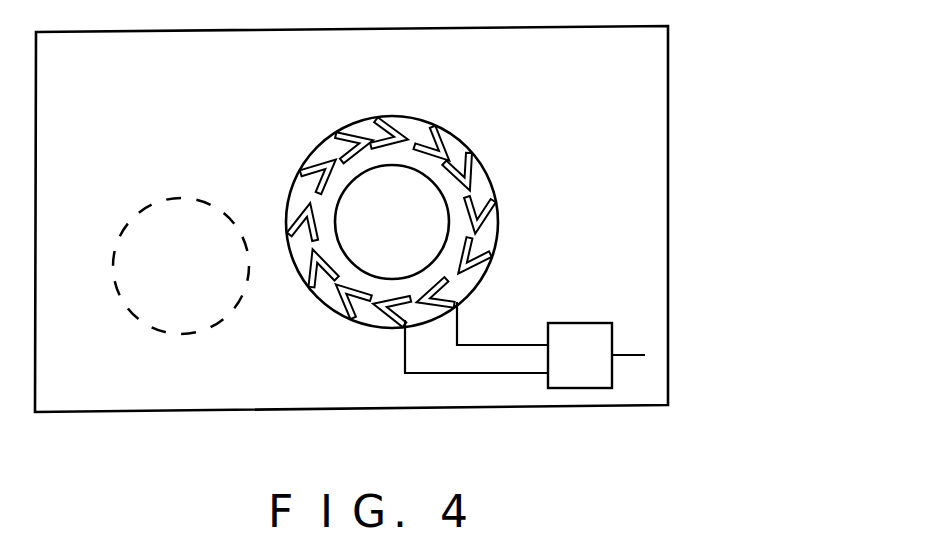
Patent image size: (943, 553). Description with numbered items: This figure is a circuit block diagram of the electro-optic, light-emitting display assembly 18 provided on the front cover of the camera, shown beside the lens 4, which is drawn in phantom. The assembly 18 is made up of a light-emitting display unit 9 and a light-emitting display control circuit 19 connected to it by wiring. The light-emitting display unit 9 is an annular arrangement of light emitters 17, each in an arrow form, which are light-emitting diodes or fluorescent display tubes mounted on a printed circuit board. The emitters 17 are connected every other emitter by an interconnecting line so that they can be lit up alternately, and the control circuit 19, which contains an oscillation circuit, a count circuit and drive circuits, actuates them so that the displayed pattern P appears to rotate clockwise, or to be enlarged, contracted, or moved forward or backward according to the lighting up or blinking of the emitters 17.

The lens 4 is at (153, 223).
The light-emitting display unit 9 is at (453, 139).
The light emitters 17 is at (482, 224).
The electro-optic, light-emitting display assembly 18 is at (668, 127).
The light-emitting display control circuit 19 is at (592, 337).
The displayed pattern P is at (310, 162).